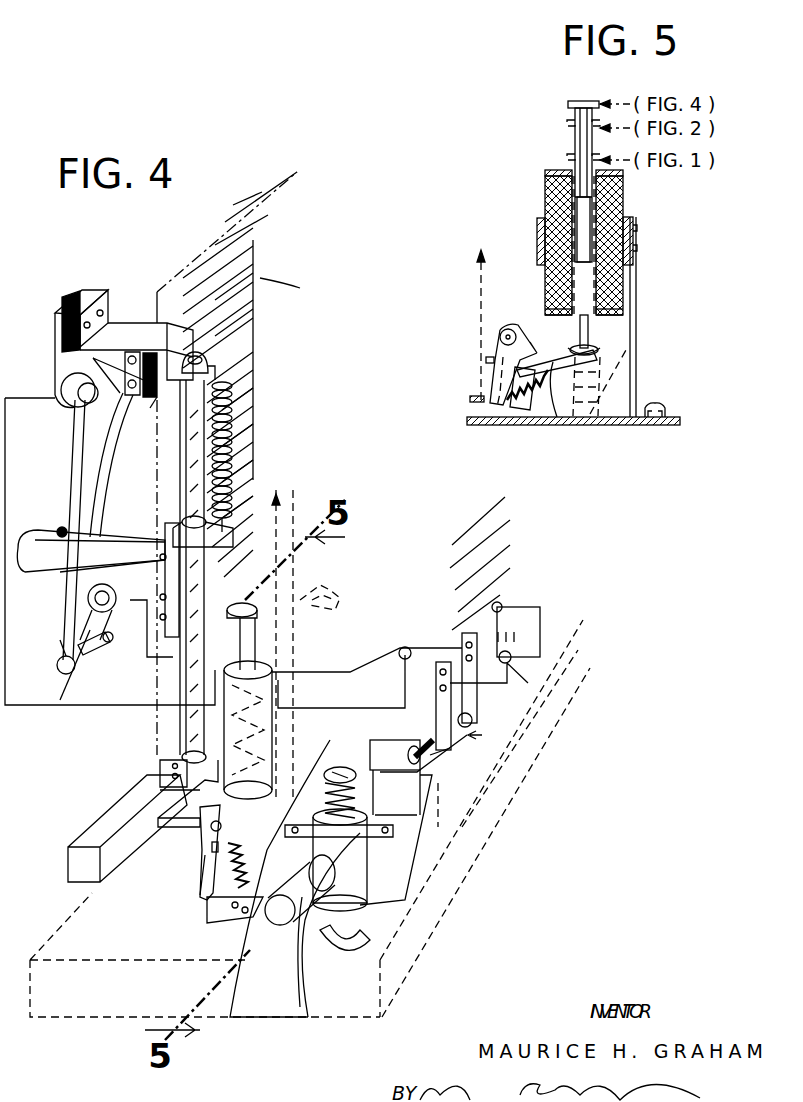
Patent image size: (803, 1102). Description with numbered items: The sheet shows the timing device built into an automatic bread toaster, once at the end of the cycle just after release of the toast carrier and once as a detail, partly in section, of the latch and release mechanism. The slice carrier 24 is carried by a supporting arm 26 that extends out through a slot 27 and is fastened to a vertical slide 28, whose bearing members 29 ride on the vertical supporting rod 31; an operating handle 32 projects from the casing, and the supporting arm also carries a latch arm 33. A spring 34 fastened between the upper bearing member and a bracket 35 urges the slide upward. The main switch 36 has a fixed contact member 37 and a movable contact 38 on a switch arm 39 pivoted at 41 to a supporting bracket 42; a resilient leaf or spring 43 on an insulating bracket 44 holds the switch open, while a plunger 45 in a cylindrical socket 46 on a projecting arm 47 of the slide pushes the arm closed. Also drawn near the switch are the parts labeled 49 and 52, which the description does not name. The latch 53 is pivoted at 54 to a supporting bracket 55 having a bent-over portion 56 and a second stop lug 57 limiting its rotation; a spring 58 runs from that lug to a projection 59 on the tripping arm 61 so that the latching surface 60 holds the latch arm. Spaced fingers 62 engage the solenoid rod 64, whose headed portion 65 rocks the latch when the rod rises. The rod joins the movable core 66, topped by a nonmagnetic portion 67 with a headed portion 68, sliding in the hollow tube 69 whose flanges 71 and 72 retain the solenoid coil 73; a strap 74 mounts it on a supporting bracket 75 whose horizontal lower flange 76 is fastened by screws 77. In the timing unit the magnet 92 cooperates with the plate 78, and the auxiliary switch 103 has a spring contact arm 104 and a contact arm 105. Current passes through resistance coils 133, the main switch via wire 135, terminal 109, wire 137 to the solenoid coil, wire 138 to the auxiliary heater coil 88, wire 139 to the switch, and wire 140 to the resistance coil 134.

In FIG. 4, the slice carrier 24 is at (335, 598).
In FIG. 4, the supporting arm 26 is at (218, 612).
In FIG. 4, the slot 27 is at (283, 495).
In FIG. 4, the vertical slide 28 is at (180, 672).
In FIG. 4, the bearing members 29 is at (185, 533).
In FIG. 4, the vertical supporting rod 31 is at (197, 718).
In FIG. 4, the operating handle 32 is at (80, 850).
In FIG. 5, the latch arm 33 is at (470, 399).
In FIG. 4, the latch arm 33 is at (178, 825).
In FIG. 4, the spring 34 is at (233, 405).
In FIG. 4, the bracket 35 is at (75, 345).
In FIG. 4, the main switch 36 is at (90, 690).
In FIG. 4, the fixed contact member 37 is at (100, 650).
In FIG. 4, the movable contact 38 is at (60, 672).
In FIG. 4, the switch arm 39 is at (60, 636).
In FIG. 4, the pivot 41 is at (70, 385).
In FIG. 4, the supporting bracket 42 is at (80, 345).
In FIG. 4, the resilient leaf or spring 43 is at (98, 465).
In FIG. 4, the insulating bracket 44 is at (152, 400).
In FIG. 4, the plunger 45 is at (60, 528).
In FIG. 4, the cylindrical socket 46 is at (48, 535).
In FIG. 4, the projecting arm 47 is at (110, 548).
In FIG. 4, the strap 49 is at (72, 470).
In FIG. 4, the link 52 is at (88, 605).
In FIG. 5, the latch 53 is at (498, 385).
In FIG. 4, the latch 53 is at (205, 880).
In FIG. 5, the pivot 54 is at (500, 336).
In FIG. 4, the pivot 54 is at (210, 835).
In FIG. 5, the supporting bracket 55 is at (523, 328).
In FIG. 4, the supporting bracket 55 is at (215, 905).
In FIG. 5, the bent-over portion 56 is at (486, 360).
In FIG. 4, the bent-over portion 56 is at (210, 850).
In FIG. 5, the second stop lug 57 is at (508, 410).
In FIG. 4, the second stop lug 57 is at (237, 895).
In FIG. 5, the spring 58 is at (521, 412).
In FIG. 4, the spring 58 is at (290, 950).
In FIG. 5, the projection 59 is at (556, 414).
In FIG. 4, the projection 59 is at (292, 930).
In FIG. 4, the latching surface 60 is at (208, 875).
In FIG. 5, the tripping arm 61 is at (533, 356).
In FIG. 5, the spaced fingers 62 is at (570, 346).
In FIG. 5, the rod 64 is at (589, 325).
In FIG. 5, the headed portion 65 is at (600, 352).
In FIG. 5, the movable core 66 is at (582, 206).
In FIG. 5, the nonmagnetic portion 67 is at (545, 186).
In FIG. 5, the flanged or headed portion 68 is at (569, 105).
In FIG. 5, the hollow tube 69 is at (623, 194).
In FIG. 5, the flange 71 is at (550, 172).
In FIG. 5, the flange 72 is at (548, 308).
In FIG. 5, the solenoid coil 73 is at (623, 206).
In FIG. 4, the solenoid coil 73 is at (280, 690).
In FIG. 5, the strap 74 is at (539, 232).
In FIG. 5, the supporting bracket 75 is at (636, 288).
In FIG. 5, the horizontal lower flange 76 is at (668, 416).
In FIG. 5, the screws 77 is at (655, 403).
In FIG. 4, the plate 78 is at (370, 834).
In FIG. 4, the auxiliary heater coil 88 is at (370, 745).
In FIG. 4, the magnet 92 is at (352, 865).
In FIG. 4, the auxiliary switch 103 is at (452, 735).
In FIG. 4, the spring contact arm 104 is at (477, 700).
In FIG. 4, the contact arm 105 is at (520, 690).
In FIG. 4, the terminal 109 is at (405, 647).
In FIG. 4, the resistance coils 133 is at (245, 245).
In FIG. 4, the resistance coil 134 is at (510, 548).
In FIG. 4, the wire 135 is at (137, 628).
In FIG. 4, the wire 137 is at (345, 670).
In FIG. 4, the wire 138 is at (298, 768).
In FIG. 4, the wire 139 is at (480, 765).
In FIG. 4, the wire 140 is at (540, 617).